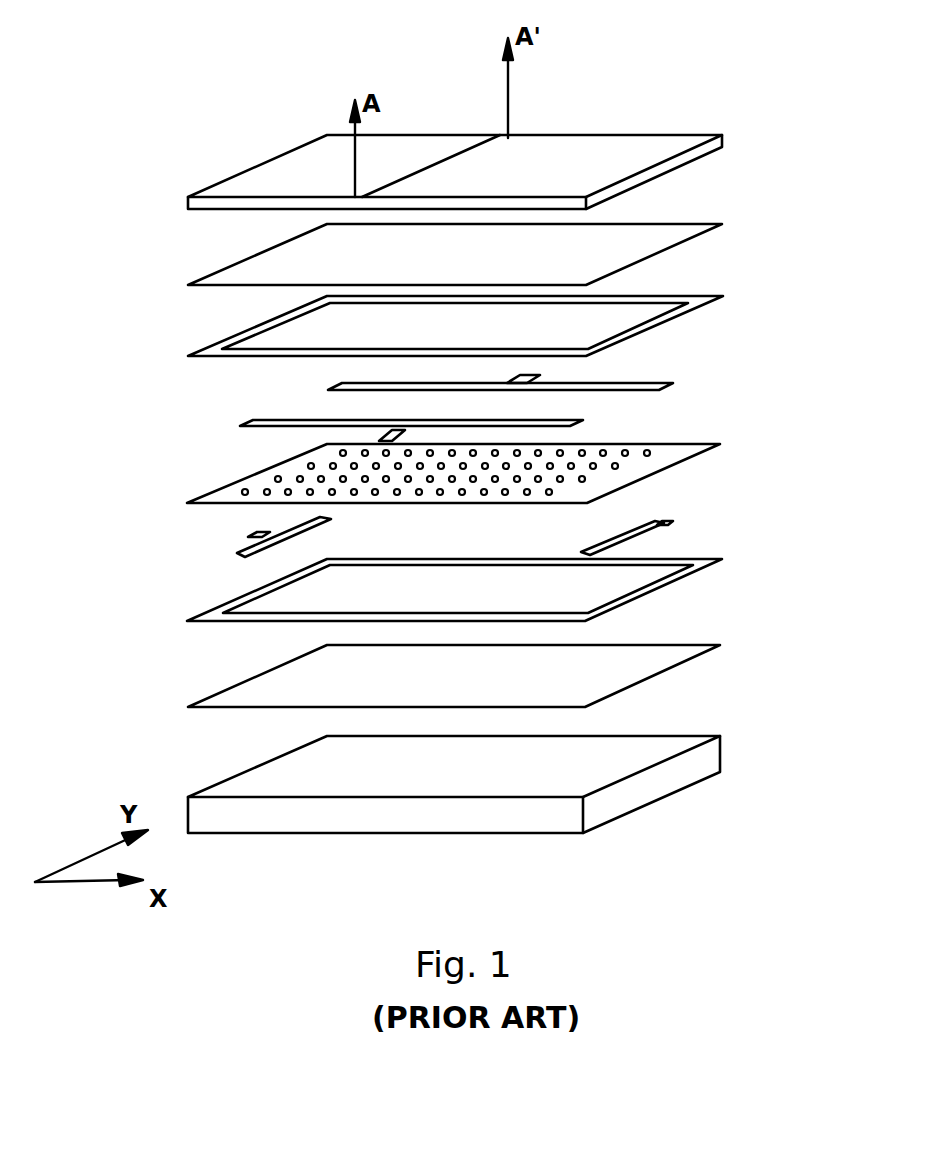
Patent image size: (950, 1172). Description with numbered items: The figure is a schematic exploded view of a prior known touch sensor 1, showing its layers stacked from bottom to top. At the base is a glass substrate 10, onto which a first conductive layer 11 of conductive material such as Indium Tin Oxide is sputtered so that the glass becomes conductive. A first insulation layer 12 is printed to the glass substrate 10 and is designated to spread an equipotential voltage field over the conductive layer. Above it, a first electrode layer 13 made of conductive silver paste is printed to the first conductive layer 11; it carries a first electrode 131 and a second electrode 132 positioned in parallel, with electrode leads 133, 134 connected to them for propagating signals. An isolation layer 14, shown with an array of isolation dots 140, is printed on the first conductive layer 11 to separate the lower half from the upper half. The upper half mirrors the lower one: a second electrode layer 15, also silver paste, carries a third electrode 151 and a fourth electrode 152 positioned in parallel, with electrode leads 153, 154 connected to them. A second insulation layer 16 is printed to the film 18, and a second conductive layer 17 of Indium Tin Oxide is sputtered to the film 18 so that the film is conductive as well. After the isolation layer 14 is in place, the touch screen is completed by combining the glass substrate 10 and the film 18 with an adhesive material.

The liquid crystal display device 1 is at (577, 105).
The glass substrate 10 is at (638, 787).
The first conductive layer 11 is at (628, 660).
The first insulation layer 12 is at (693, 563).
The first electrode layer 13 is at (485, 530).
The first electrode 131 is at (240, 552).
The second electrode 132 is at (675, 523).
The electrode lead 133 is at (253, 533).
The electrode lead 134 is at (652, 535).
The isolation layer 14 is at (428, 462).
The spacer dots 140 is at (243, 490).
The second electrode layer 15 is at (443, 399).
The third electrode 151 is at (242, 423).
The fourth electrode 152 is at (330, 388).
The electrode lead 153 is at (380, 438).
The electrode lead 154 is at (535, 375).
The second insulation layer 16 is at (702, 305).
The second conductive layer 17 is at (667, 230).
The film 18 is at (652, 153).